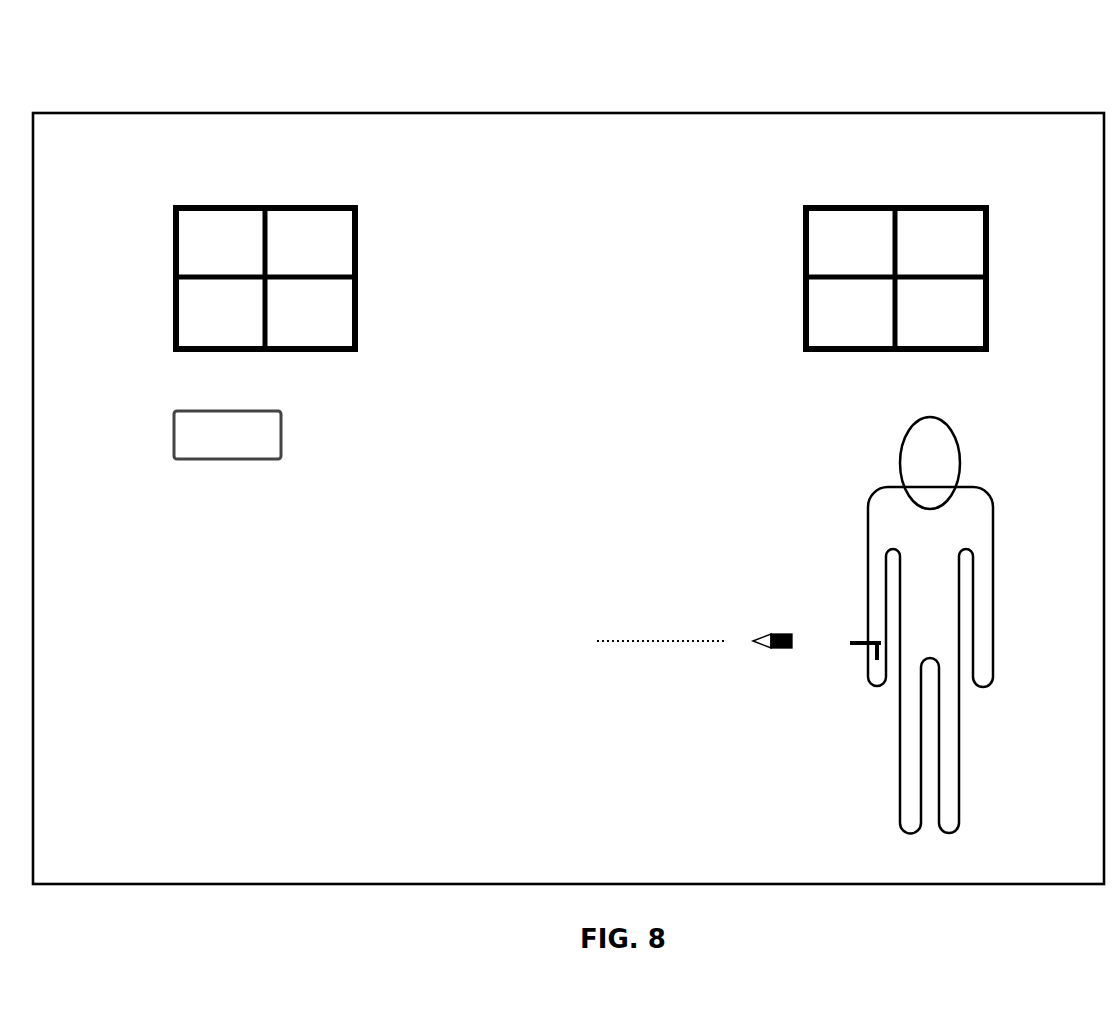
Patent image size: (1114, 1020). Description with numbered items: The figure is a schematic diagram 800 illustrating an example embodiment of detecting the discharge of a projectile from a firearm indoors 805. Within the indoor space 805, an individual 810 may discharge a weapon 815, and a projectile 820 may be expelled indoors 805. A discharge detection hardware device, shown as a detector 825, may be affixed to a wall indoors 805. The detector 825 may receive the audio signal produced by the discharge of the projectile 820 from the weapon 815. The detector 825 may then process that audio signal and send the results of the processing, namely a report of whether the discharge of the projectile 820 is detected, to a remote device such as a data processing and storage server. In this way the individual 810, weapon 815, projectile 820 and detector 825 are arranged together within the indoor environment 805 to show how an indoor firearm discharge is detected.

The schematic diagram 800 is at (239, 77).
The indoors 805 is at (694, 113).
The individual 810 is at (975, 789).
The weapon 815 is at (853, 672).
The projectile 820 is at (777, 634).
The detector 825 is at (274, 442).